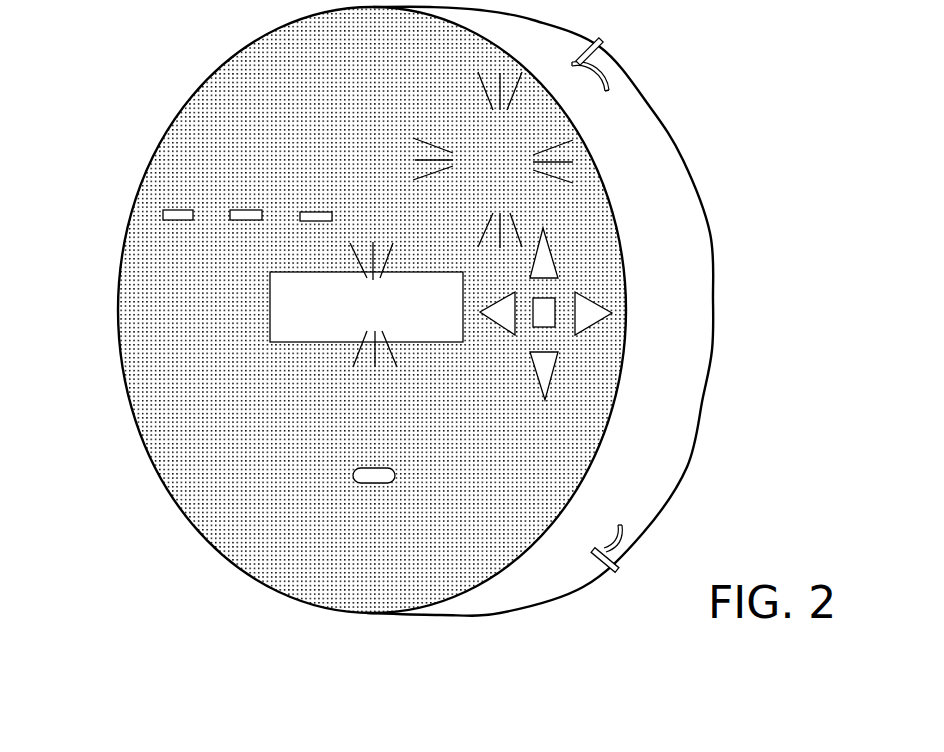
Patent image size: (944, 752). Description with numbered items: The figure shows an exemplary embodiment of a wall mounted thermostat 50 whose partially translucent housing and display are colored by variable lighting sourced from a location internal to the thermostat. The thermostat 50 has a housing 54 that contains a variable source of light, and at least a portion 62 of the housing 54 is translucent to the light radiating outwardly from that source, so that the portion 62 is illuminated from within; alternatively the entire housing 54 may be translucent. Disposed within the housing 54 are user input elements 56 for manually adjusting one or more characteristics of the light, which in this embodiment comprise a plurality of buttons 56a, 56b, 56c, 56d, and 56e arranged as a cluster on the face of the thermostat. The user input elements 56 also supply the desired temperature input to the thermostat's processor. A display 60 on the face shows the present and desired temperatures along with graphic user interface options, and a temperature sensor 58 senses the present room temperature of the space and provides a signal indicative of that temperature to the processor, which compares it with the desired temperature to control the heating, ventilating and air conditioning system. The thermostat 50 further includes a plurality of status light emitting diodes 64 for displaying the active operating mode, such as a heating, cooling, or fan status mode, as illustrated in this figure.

The thermostat 50 is at (178, 83).
The housing 54 is at (650, 210).
The user input elements 56 is at (636, 333).
The button 56a is at (543, 245).
The button 56b is at (597, 312).
The button 56c is at (540, 382).
The button 56d is at (497, 315).
The button 56e is at (540, 313).
The temperature sensor 58 is at (375, 483).
The display 60 is at (315, 320).
The translucent portion of the housing 62 is at (507, 160).
The status light emitting diodes 64 is at (150, 213).